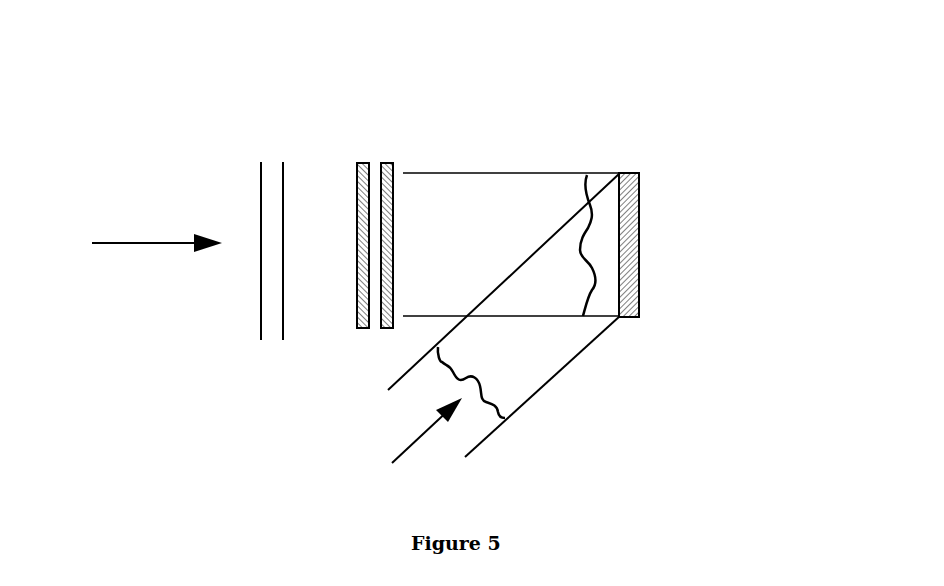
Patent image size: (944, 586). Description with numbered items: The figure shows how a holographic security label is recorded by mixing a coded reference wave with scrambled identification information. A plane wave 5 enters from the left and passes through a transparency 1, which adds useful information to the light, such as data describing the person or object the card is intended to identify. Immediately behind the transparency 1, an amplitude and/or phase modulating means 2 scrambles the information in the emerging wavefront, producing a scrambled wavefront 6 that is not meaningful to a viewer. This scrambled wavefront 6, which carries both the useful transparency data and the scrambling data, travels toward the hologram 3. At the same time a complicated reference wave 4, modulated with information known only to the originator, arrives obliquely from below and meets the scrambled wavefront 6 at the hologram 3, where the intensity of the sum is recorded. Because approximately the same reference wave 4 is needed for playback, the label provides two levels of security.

The transparency 1 is at (363, 162).
The amplitude and/or phase modulating means 2 is at (388, 330).
The hologram 3 is at (632, 260).
The reference wave 4 is at (492, 400).
The plane wave 5 is at (132, 240).
The scrambled wavefront 6 is at (578, 186).